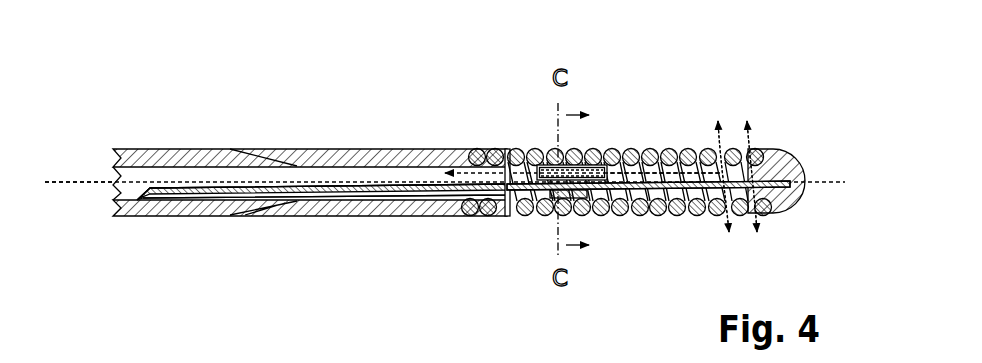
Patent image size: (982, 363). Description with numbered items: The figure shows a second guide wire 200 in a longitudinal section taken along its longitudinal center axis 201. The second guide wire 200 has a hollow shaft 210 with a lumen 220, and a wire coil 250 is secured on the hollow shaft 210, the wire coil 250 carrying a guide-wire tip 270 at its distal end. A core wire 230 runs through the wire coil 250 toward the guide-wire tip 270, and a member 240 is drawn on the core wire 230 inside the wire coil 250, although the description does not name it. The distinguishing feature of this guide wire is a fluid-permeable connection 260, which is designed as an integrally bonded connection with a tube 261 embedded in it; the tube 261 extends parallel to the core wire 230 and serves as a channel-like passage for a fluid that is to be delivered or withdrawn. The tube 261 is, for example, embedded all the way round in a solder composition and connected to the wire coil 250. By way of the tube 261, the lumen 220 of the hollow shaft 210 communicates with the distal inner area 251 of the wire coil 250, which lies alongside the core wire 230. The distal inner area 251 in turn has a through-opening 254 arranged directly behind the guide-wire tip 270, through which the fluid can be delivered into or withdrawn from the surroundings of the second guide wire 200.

The second guide wire 200 is at (112, 253).
The longitudinal center axis 201 is at (87, 182).
The hollow shaft 210 is at (238, 223).
The lumen 220 is at (317, 186).
The core wire 230 is at (430, 186).
The marker / fixing member 240 is at (600, 165).
The wire coil 250 is at (628, 141).
The distal inner area 251 is at (672, 149).
The through-opening 254 is at (749, 127).
The fluid-permeable connection 260 is at (578, 216).
The tube 261 is at (545, 152).
The guide-wire tip 270 is at (800, 201).